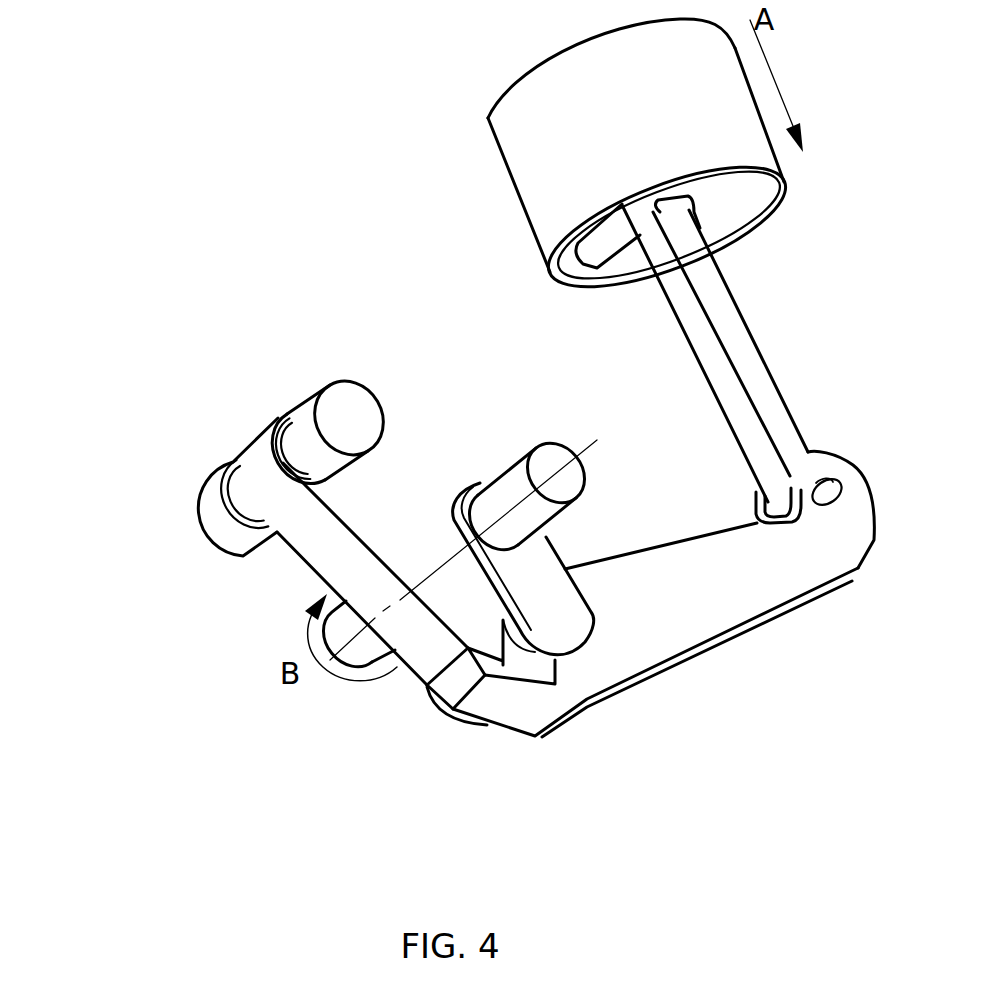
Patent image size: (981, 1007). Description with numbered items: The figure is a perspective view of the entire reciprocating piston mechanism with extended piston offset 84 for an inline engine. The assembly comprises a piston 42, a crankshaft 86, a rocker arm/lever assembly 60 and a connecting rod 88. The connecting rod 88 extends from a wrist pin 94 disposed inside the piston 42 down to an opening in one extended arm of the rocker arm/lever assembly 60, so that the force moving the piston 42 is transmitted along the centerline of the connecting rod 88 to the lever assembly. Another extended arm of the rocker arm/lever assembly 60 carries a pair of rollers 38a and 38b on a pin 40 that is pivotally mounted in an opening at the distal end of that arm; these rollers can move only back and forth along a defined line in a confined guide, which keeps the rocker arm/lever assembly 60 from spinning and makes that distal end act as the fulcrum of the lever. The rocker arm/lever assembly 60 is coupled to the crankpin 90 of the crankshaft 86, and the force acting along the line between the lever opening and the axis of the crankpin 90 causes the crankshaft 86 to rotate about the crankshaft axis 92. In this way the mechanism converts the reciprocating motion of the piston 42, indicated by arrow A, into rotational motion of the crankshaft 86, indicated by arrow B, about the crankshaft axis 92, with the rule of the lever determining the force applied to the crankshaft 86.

The roller 38a is at (327, 380).
The roller 38b is at (190, 500).
The pin 40 is at (242, 502).
The piston 42 is at (502, 88).
The rocker arm/lever assembly 60 is at (307, 557).
The reciprocating piston mechanism with extended piston offset 84 is at (662, 742).
The crankshaft 86 is at (580, 592).
The connecting rod 88 is at (757, 322).
The crankpin 90 is at (527, 658).
The crankshaft axis 92 is at (597, 440).
The wrist pin 94 is at (628, 250).